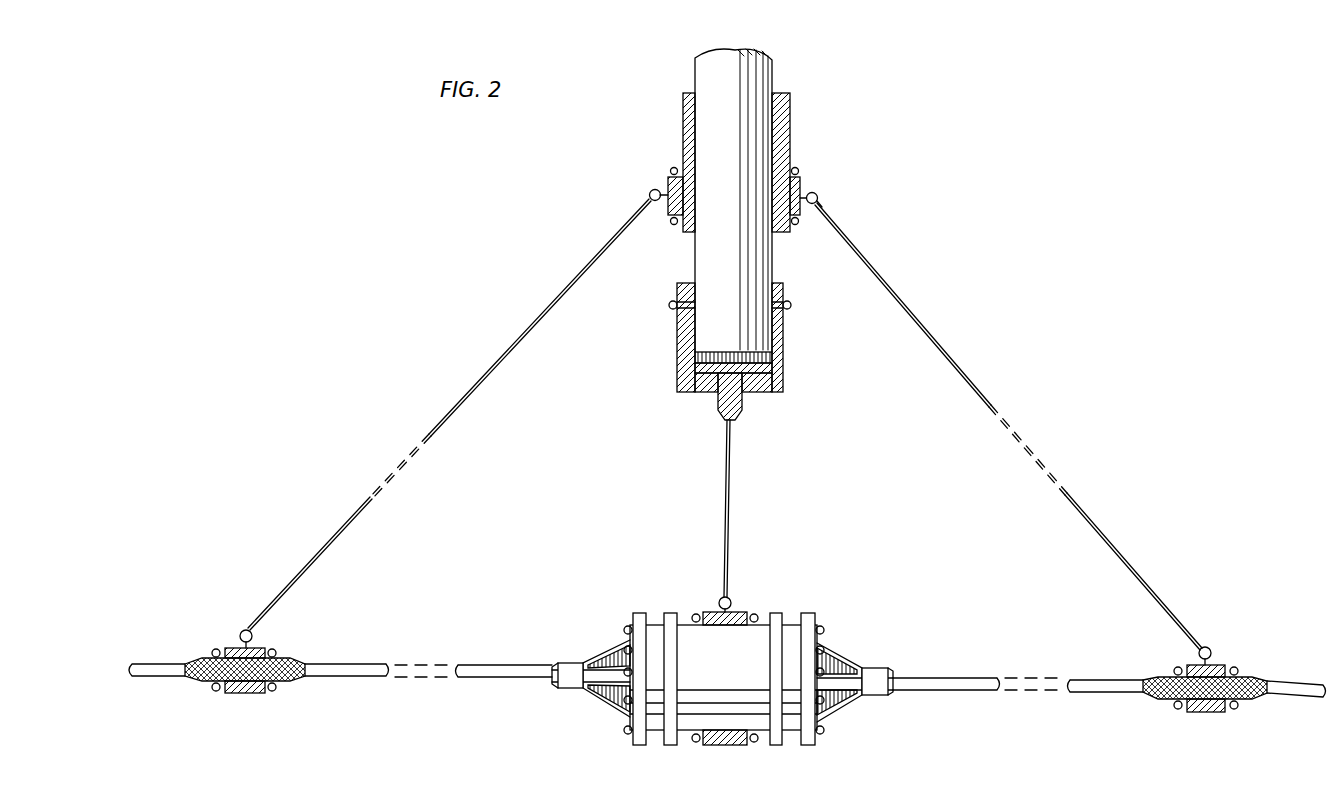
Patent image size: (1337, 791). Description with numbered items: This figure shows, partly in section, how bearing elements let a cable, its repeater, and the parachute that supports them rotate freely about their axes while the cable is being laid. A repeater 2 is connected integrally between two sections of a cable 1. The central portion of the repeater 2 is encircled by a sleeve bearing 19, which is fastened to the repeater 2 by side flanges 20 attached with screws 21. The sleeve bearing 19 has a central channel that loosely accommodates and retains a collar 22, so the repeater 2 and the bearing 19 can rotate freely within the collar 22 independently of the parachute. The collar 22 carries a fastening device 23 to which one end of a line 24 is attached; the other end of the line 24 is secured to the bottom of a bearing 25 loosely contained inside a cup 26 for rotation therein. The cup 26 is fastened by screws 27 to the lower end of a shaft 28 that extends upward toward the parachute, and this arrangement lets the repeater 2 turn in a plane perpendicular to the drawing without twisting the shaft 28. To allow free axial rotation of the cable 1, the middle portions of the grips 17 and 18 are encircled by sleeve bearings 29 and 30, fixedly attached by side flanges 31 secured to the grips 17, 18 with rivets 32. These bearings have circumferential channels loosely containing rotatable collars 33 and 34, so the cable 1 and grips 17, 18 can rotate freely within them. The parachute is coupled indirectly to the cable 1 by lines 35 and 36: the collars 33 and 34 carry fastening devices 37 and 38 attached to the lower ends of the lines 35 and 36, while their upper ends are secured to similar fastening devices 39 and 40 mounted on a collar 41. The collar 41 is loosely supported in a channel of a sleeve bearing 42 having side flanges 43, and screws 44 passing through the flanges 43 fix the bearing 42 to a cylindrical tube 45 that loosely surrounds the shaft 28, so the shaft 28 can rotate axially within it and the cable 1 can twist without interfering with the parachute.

The cable 1 is at (148, 660).
The repeater 2 is at (657, 727).
The grip 17 is at (1252, 700).
The grip 18 is at (295, 660).
The sleeve bearing 19 is at (707, 612).
The side flanges 20 is at (757, 743).
The screws 21 is at (694, 743).
The collar 22 is at (720, 746).
The fastening device 23 is at (731, 600).
The line 24 is at (733, 478).
The bearing 25 is at (742, 400).
The cup 26 is at (677, 360).
The screws 27 is at (670, 306).
The shaft 28 is at (705, 80).
The sleeve bearing 29 is at (1190, 665).
The sleeve bearing 30 is at (263, 648).
The side flanges 31 is at (212, 689).
The rivets 32 is at (275, 689).
The collar 33 is at (1200, 712).
The collar 34 is at (241, 694).
The line 35 is at (975, 380).
The line 36 is at (487, 378).
The fastening device 37 is at (1210, 650).
The fastening device 38 is at (246, 630).
The fastening device 39 is at (820, 200).
The fastening device 40 is at (650, 192).
The collar 41 is at (817, 196).
The sleeve bearing 42 is at (801, 178).
The side flanges 43 is at (679, 176).
The screws 44 is at (671, 225).
The cylindrical tube 45 is at (792, 108).